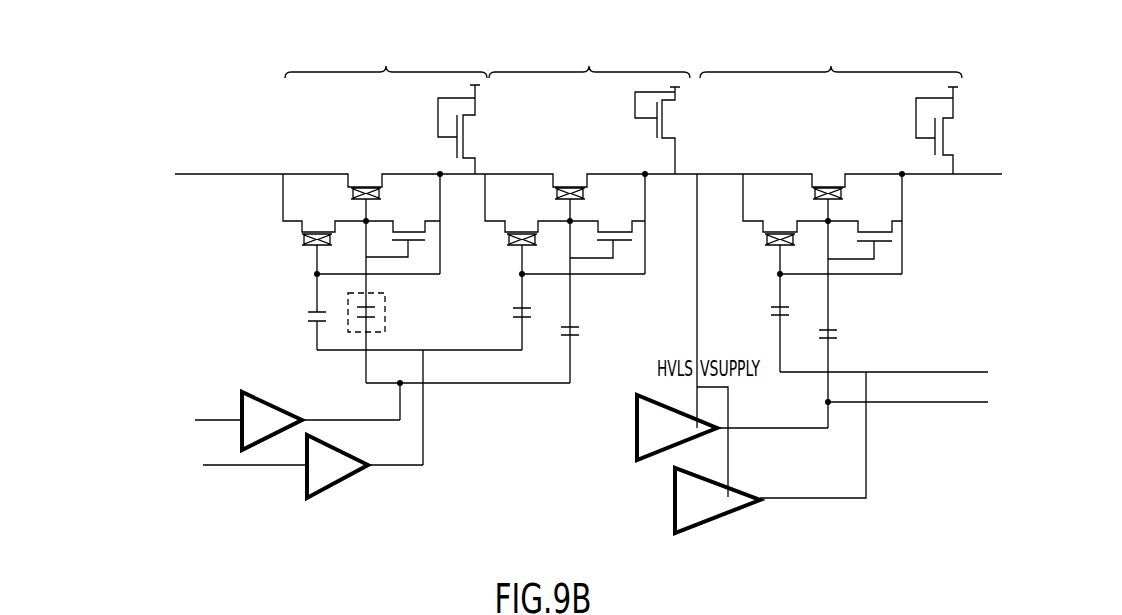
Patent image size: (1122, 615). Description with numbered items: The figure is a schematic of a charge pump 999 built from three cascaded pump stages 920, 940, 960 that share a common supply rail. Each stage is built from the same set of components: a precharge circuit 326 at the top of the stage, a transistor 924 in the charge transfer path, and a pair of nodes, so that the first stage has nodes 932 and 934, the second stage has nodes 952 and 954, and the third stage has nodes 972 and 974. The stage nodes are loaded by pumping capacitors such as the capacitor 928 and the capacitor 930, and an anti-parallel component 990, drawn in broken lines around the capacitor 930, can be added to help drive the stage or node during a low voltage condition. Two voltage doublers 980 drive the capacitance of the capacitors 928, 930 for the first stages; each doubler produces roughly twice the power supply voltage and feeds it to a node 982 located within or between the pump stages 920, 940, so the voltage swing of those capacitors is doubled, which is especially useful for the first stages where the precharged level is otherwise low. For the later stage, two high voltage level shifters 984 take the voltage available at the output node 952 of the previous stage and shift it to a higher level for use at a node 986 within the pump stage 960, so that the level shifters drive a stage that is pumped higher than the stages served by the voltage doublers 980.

The pump stage 920 is at (413, 251).
The pump stage 940 is at (584, 210).
The pump stage 960 is at (831, 233).
The precharge circuit 326 is at (430, 119).
The transistor 924 is at (363, 181).
The node 932 is at (437, 209).
The output node 952 is at (638, 209).
The node 972 is at (900, 209).
The node 934 is at (358, 265).
The node 954 is at (562, 292).
The node 974 is at (819, 303).
The capacitor 928 is at (312, 320).
The anti-parallel component 990 is at (377, 346).
The capacitor 930 is at (357, 323).
The voltage doubler 980 is at (238, 392).
The node 982 is at (468, 386).
The high voltage level shifter 984 is at (637, 423).
The node 986 is at (887, 402).
The charge pump 999 is at (1024, 314).